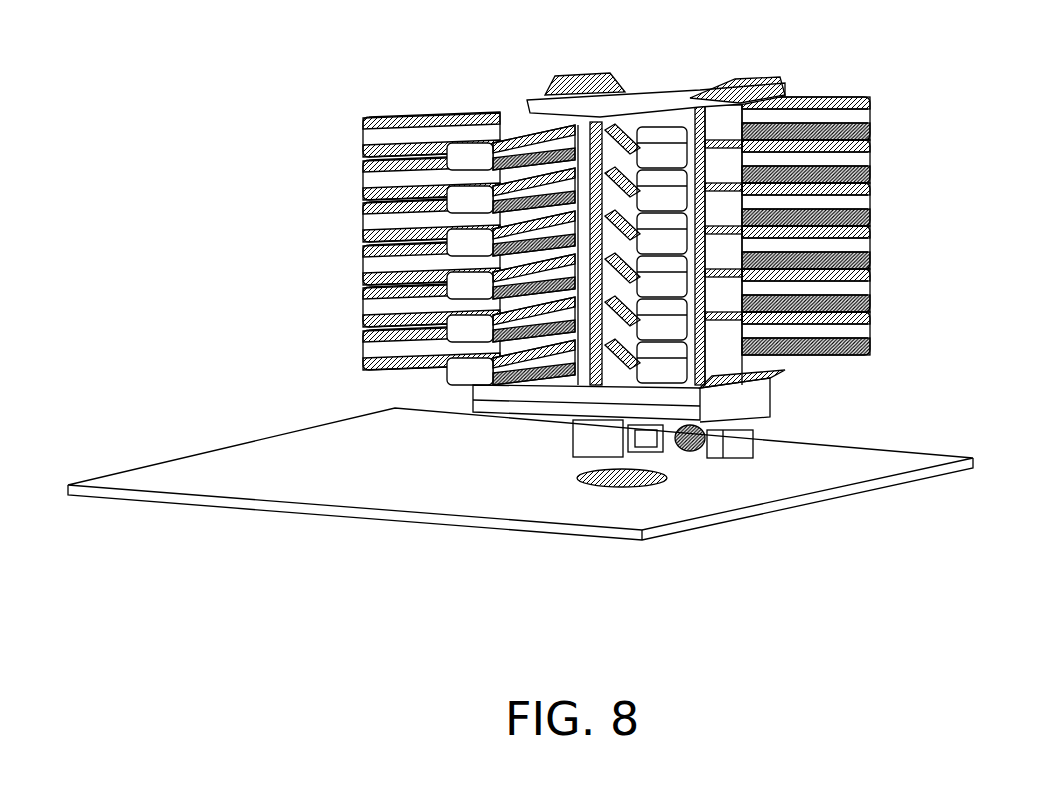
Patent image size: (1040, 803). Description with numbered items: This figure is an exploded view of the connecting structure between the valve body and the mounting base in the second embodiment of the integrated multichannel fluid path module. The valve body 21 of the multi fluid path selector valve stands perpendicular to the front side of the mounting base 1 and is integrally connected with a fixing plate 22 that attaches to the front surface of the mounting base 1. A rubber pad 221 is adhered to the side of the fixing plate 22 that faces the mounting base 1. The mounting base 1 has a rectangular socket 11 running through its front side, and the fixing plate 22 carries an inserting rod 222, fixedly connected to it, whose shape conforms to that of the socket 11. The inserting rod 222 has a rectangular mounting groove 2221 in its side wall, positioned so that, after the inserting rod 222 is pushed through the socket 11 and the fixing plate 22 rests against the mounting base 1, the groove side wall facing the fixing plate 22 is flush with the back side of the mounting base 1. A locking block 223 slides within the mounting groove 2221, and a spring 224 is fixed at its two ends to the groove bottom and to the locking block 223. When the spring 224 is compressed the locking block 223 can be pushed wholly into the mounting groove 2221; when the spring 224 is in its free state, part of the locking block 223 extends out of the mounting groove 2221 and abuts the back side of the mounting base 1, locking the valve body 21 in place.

The mounting base 1 is at (327, 487).
The socket 11 is at (618, 470).
The valve body 21 is at (637, 92).
The fixing plate 22 is at (639, 486).
The rubber pad 221 is at (770, 408).
The inserting rod 222 is at (583, 440).
The mounting groove 2221 is at (637, 448).
The locking block 223 is at (740, 450).
The spring 224 is at (697, 447).